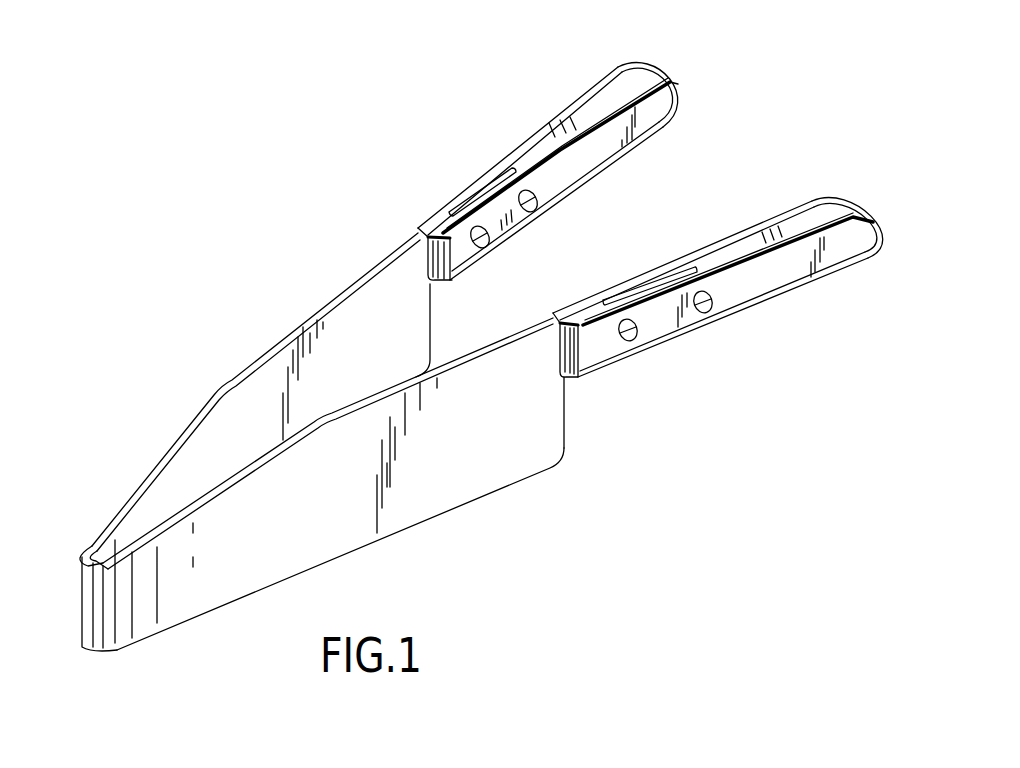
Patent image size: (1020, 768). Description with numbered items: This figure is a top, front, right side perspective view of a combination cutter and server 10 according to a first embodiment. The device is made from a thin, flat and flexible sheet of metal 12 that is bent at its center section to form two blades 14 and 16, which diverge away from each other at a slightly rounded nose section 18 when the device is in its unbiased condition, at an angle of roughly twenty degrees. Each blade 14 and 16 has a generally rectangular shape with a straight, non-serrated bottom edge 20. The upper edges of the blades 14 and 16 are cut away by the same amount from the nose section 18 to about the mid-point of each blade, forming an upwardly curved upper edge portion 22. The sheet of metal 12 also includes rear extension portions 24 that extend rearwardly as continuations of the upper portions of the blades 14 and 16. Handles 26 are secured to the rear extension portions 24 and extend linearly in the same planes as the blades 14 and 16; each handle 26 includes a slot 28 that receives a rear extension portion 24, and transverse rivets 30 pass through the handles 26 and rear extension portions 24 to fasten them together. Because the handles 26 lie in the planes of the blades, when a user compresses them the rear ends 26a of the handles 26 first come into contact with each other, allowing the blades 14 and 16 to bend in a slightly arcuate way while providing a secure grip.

The combination cutter and server 10 is at (257, 249).
The thin, flat and flexible sheet of metal 12 is at (147, 451).
The blade 14 is at (302, 336).
The blade 16 is at (293, 565).
The slightly rounded nose section 18 is at (82, 600).
The straight, non-serrated bottom edge 20 is at (183, 623).
The upwardly curved upper edge portion 22 is at (102, 545).
The rear extension portion 24 is at (443, 206).
The handle 26 is at (575, 102).
The rear end of handle 26a is at (656, 66).
The slot 28 is at (648, 291).
The transverse rivet 30 is at (489, 242).